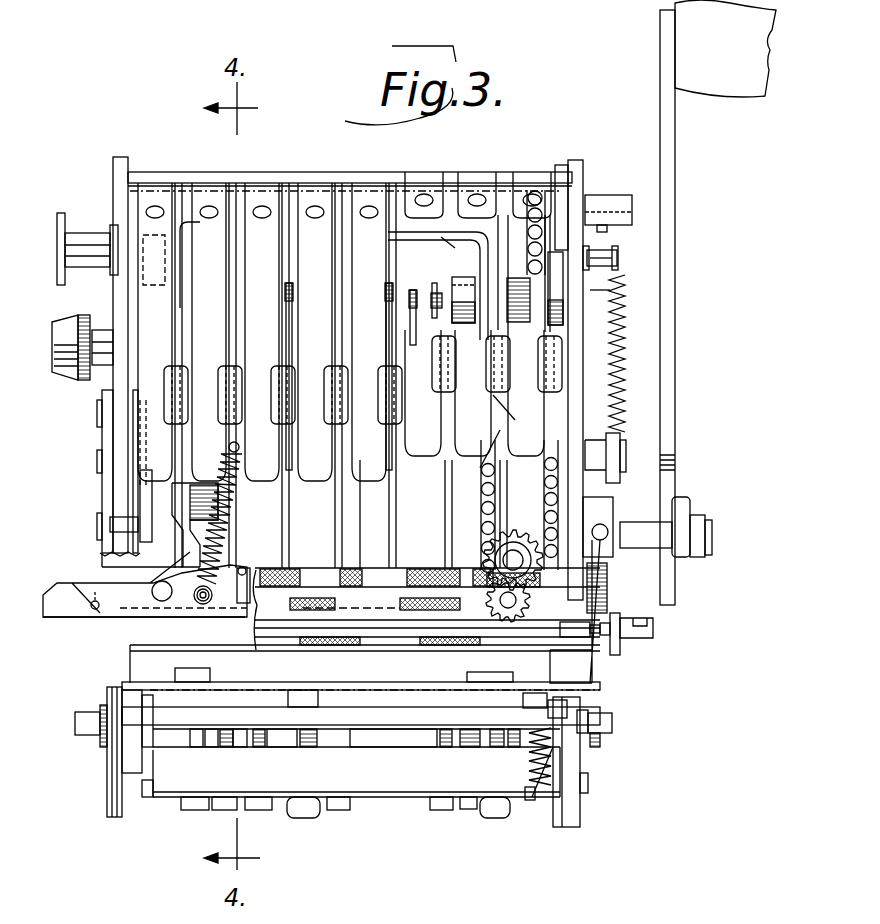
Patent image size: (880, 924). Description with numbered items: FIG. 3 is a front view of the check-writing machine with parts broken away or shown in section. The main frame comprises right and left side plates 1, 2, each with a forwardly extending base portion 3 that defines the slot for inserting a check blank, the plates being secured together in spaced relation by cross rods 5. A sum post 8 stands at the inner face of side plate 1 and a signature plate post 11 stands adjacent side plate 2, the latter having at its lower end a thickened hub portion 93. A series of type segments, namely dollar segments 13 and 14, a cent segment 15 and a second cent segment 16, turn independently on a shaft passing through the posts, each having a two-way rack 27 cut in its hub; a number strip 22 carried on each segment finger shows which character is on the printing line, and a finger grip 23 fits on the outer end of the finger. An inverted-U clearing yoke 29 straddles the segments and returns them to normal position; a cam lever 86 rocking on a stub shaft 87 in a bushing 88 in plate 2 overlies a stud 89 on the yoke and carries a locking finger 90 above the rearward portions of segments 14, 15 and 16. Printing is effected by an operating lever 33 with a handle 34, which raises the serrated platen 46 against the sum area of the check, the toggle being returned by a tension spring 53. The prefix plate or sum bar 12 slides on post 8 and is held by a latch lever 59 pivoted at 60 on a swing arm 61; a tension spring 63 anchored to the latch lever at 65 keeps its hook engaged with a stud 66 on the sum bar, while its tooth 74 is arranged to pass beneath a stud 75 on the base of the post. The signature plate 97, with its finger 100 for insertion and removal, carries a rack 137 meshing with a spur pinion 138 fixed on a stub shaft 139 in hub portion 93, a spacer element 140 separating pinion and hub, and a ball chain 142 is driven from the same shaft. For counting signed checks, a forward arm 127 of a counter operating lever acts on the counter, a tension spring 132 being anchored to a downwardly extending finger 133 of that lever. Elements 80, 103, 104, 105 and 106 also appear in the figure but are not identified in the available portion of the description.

The side plate 1 is at (122, 157).
The side plate 2 is at (577, 160).
The base portion 3 is at (112, 820).
The cross rods 5 is at (330, 176).
The sum post 8 is at (178, 517).
The signature plate post 11 is at (477, 492).
The prefix plate 12 is at (55, 617).
The dollar segments 13 is at (312, 530).
The dollar segment 14 is at (393, 290).
The cent segment 15 is at (419, 282).
The second cent segment 16 is at (434, 285).
The number strip 22 is at (207, 184).
The finger grip 23 is at (258, 415).
The two-way rack 27 is at (310, 290).
The clearing yoke 29 is at (469, 277).
The operating lever 33 is at (668, 441).
The handle 34 is at (723, 78).
The serrated platen 46 is at (145, 688).
The tension spring 53 is at (620, 335).
The latch lever 59 is at (72, 583).
The pivot 60 is at (160, 602).
The swing arm 61 is at (197, 538).
The tension spring 63 is at (224, 530).
The spring anchor point 65 is at (200, 606).
The stud 66 is at (95, 612).
The tooth 74 is at (238, 600).
The stud 75 is at (300, 585).
The bar 80 is at (370, 645).
The cam lever 86 is at (470, 457).
The stub shaft 87 is at (612, 289).
The bushing 88 is at (580, 262).
The stud 89 is at (488, 262).
The locking finger 90 is at (399, 483).
The hub portion 93 is at (462, 542).
The signature plate 97 is at (642, 648).
The finger 100 is at (656, 630).
The pin 103 is at (517, 412).
The plate 104 is at (558, 182).
The bracket 105 is at (440, 252).
The block 106 is at (582, 208).
The forward arm 127 is at (562, 712).
The tension spring 132 is at (530, 755).
The finger 133 is at (547, 800).
The rack 137 is at (480, 598).
The spur pinion 138 is at (548, 522).
The stub shaft 139 is at (493, 648).
The spacer element 140 is at (540, 548).
The ball chain 142 is at (555, 478).